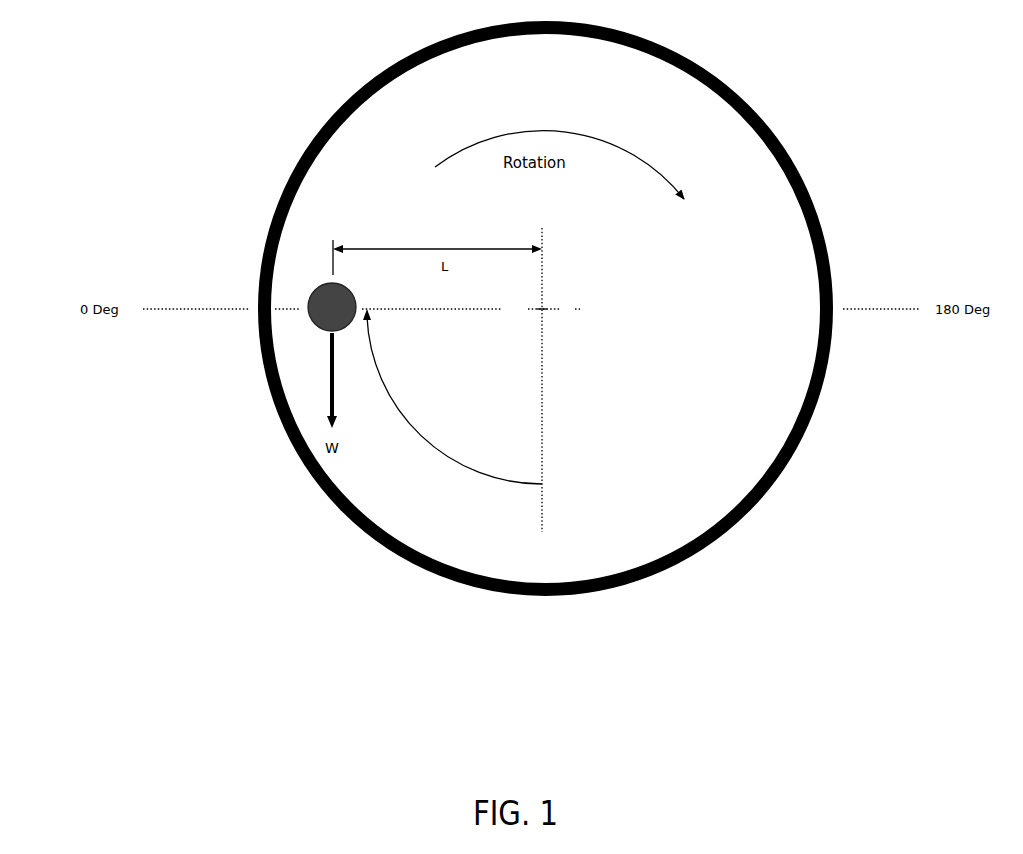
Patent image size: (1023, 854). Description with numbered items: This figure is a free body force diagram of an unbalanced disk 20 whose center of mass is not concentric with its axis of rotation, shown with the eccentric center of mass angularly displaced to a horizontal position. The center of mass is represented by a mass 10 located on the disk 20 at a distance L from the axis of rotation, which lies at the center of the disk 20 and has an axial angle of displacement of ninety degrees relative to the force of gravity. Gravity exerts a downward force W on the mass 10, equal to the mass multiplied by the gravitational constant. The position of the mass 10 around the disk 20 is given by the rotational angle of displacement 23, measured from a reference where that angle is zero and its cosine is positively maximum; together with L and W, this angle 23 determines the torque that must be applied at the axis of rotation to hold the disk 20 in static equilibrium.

The mass 10 is at (330, 312).
The disk 20 is at (377, 72).
The rotational angle of displacement 23 is at (438, 452).